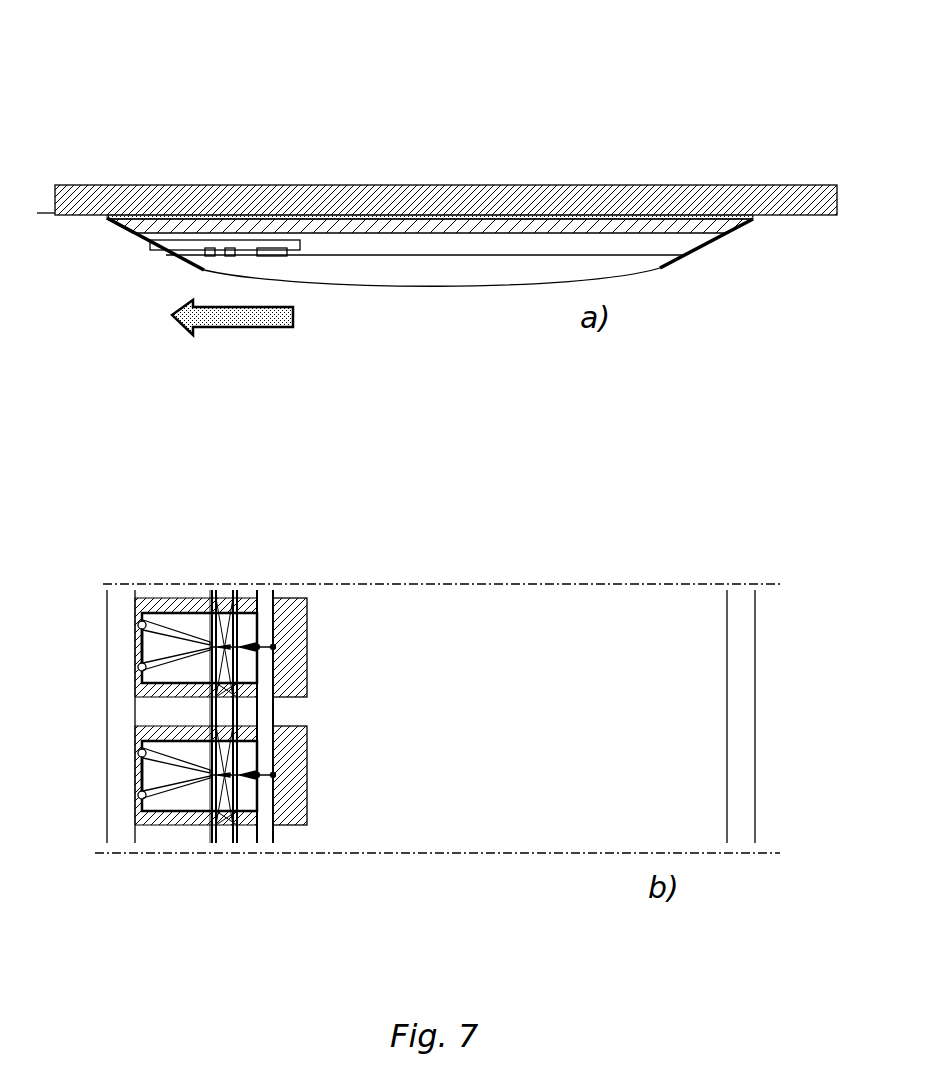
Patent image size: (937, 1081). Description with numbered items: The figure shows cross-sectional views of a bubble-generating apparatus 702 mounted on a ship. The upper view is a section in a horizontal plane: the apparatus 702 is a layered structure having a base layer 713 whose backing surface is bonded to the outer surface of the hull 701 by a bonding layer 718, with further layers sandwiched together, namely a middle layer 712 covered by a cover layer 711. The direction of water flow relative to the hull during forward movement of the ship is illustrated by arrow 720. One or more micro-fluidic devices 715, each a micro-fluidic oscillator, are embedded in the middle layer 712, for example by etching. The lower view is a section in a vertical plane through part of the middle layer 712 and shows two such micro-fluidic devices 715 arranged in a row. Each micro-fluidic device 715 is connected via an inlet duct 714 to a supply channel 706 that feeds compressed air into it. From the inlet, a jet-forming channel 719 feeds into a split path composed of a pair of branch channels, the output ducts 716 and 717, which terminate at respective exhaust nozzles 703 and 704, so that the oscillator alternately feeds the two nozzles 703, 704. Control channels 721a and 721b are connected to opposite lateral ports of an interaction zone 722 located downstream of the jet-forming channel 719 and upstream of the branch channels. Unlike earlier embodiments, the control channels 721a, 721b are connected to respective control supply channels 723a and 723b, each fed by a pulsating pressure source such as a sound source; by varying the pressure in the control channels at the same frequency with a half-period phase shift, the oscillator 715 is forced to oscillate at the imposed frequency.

The hull 701 is at (437, 161).
The apparatus 702 is at (469, 280).
The exhaust nozzle 703 is at (117, 654).
The exhaust nozzle 704 is at (109, 686).
The supply channel 706 is at (223, 428).
The cover layer 711 is at (432, 298).
The middle layer 712 is at (437, 500).
The base layer 713 is at (385, 491).
The duct 714 is at (303, 716).
The micro-fluidic device 715 is at (147, 497).
The output duct 716 is at (146, 666).
The output duct 717 is at (91, 717).
The bonding layer 718 is at (169, 194).
The jet-forming channel 719 is at (320, 709).
The arrow 720 is at (250, 327).
The control channel 721a is at (178, 639).
The control channel 721b is at (296, 758).
The interaction zone 722 is at (149, 693).
The control supply channel 723a is at (172, 514).
The control supply channel 723b is at (185, 467).